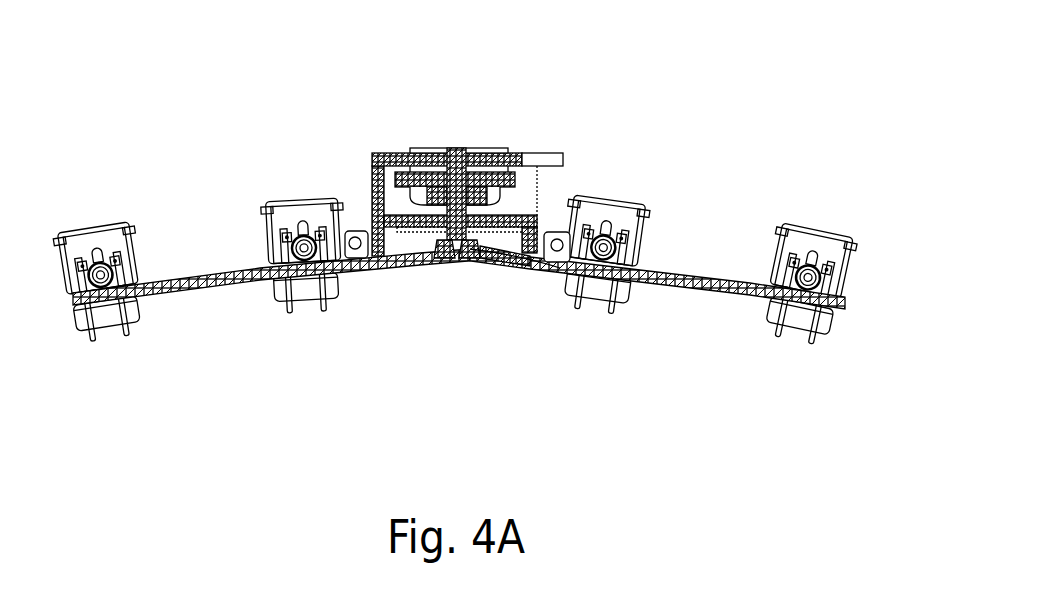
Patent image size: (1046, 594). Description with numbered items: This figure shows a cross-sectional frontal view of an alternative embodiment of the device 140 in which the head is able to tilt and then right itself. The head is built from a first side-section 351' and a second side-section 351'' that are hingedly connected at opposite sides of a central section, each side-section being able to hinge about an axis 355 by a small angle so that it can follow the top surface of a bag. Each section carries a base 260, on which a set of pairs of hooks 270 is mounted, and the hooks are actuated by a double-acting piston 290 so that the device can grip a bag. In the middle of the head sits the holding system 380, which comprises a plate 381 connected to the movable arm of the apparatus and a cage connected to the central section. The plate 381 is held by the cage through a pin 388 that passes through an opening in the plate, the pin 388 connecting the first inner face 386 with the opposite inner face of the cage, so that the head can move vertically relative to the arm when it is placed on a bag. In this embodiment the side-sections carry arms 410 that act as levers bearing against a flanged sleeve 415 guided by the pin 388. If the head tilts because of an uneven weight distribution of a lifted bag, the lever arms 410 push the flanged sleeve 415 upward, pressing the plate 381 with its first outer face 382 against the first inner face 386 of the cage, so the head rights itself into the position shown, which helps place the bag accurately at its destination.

The device 140 is at (187, 85).
The double-acting piston 290 is at (107, 232).
The hooks 270 is at (133, 325).
The base 260 is at (320, 300).
The first side-section 351' is at (271, 337).
The second side-section 351'' is at (657, 320).
The hinge axis 355 is at (355, 236).
The holding system 380 is at (380, 153).
The plate 381 is at (410, 153).
The first outer face 382 is at (508, 153).
The flanged sleeve 415 is at (438, 262).
The arms 410 is at (410, 260).
The pin 388 is at (527, 250).
The first inner face 386 is at (532, 243).